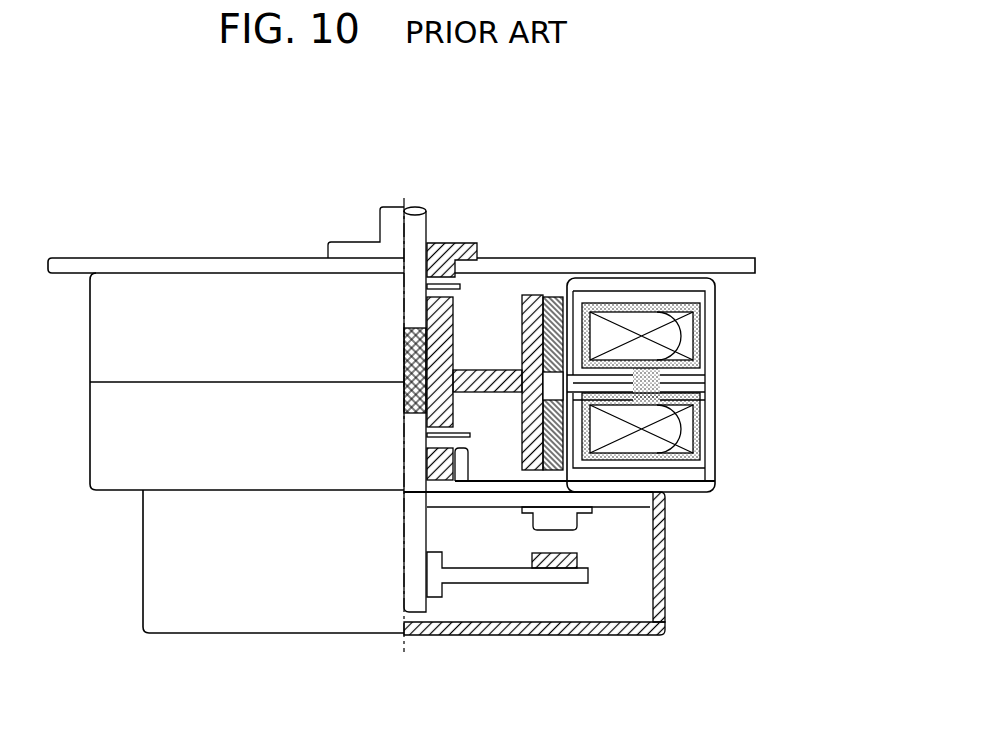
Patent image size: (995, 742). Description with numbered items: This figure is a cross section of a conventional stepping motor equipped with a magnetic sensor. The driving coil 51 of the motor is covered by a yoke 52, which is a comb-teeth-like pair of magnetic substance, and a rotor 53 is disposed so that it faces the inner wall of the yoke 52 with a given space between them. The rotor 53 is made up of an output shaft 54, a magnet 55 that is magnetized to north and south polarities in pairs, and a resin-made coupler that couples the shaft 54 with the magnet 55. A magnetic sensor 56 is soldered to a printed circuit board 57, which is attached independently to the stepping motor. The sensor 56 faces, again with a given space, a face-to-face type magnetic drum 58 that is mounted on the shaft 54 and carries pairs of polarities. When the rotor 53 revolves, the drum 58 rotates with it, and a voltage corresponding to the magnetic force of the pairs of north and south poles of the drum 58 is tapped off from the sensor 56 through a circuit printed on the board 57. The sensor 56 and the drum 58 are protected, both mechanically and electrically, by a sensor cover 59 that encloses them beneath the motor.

The driving coil 51 is at (662, 428).
The yoke 52 is at (688, 293).
The rotor 53 is at (450, 312).
The output shaft 54 is at (417, 228).
The magnet 55 is at (556, 300).
The magnetic sensor 56 is at (556, 518).
The printed circuit board 57 is at (661, 510).
The magnetic drum 58 is at (557, 570).
The sensor cover 59 is at (495, 635).